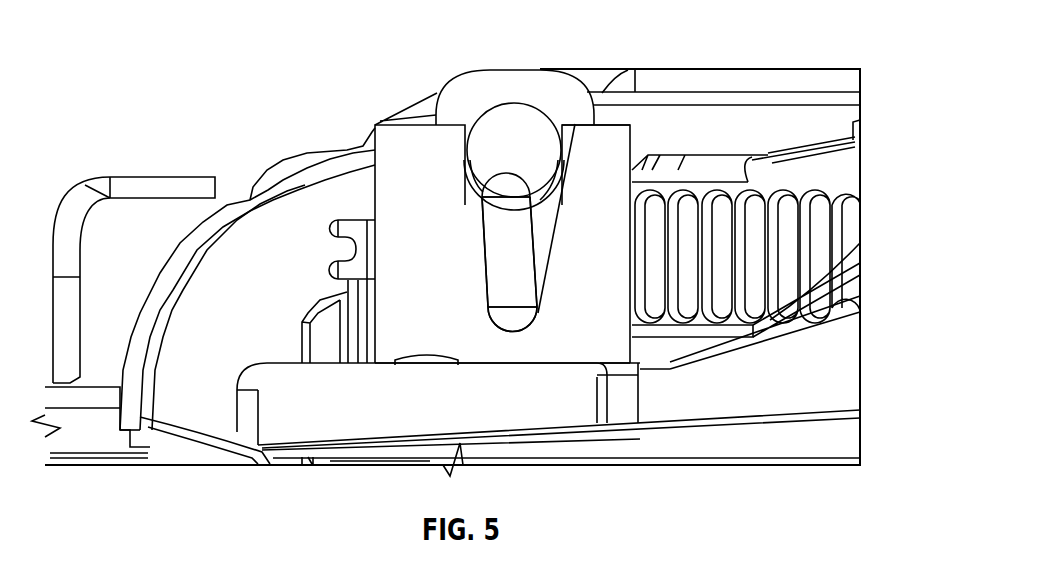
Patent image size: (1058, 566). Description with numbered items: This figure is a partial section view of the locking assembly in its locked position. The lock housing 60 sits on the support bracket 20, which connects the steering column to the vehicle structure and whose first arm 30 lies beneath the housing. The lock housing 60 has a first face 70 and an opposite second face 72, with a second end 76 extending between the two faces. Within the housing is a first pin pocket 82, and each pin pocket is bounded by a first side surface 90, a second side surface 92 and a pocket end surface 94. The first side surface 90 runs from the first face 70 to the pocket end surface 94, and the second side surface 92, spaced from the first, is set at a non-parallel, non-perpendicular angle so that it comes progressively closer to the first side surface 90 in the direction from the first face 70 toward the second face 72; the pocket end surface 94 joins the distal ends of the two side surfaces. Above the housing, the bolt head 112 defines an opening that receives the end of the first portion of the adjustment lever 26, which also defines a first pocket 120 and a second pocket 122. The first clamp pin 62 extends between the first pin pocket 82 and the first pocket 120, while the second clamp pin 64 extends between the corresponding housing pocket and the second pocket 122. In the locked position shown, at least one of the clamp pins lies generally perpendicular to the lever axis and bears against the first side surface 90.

The support bracket 20 is at (862, 328).
The adjustment lever 26 is at (507, 141).
The first arm 30 is at (580, 413).
The lock housing 60 is at (364, 189).
The first clamp pin 62 is at (505, 241).
The second clamp pin 64 is at (533, 252).
The first face 70 is at (625, 124).
The second face 72 is at (615, 362).
The second end 76 is at (608, 151).
The first pin pocket 82 is at (548, 249).
The first side surface 90 is at (488, 240).
The second side surface 92 is at (562, 213).
The pocket end surface 94 is at (512, 332).
The bolt head 112 is at (523, 83).
The first pocket 120 is at (510, 173).
The second pocket 122 is at (514, 180).